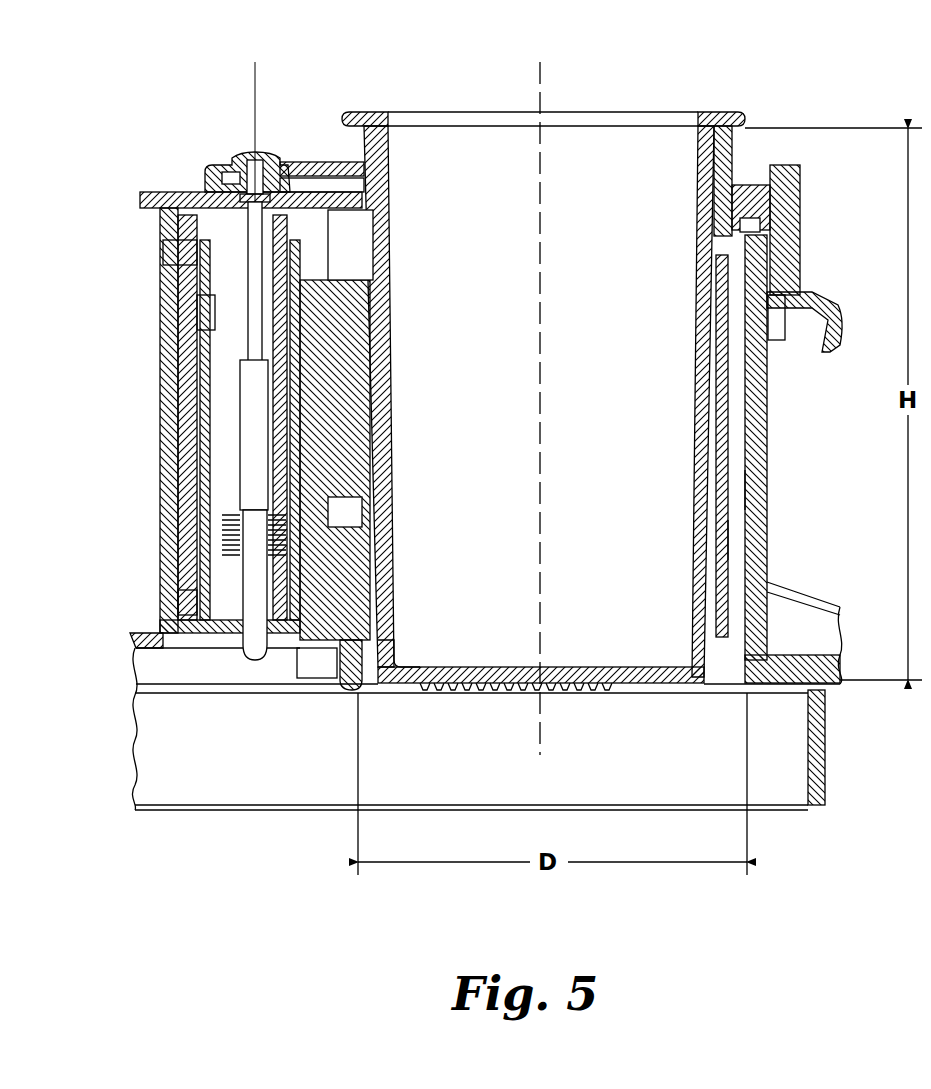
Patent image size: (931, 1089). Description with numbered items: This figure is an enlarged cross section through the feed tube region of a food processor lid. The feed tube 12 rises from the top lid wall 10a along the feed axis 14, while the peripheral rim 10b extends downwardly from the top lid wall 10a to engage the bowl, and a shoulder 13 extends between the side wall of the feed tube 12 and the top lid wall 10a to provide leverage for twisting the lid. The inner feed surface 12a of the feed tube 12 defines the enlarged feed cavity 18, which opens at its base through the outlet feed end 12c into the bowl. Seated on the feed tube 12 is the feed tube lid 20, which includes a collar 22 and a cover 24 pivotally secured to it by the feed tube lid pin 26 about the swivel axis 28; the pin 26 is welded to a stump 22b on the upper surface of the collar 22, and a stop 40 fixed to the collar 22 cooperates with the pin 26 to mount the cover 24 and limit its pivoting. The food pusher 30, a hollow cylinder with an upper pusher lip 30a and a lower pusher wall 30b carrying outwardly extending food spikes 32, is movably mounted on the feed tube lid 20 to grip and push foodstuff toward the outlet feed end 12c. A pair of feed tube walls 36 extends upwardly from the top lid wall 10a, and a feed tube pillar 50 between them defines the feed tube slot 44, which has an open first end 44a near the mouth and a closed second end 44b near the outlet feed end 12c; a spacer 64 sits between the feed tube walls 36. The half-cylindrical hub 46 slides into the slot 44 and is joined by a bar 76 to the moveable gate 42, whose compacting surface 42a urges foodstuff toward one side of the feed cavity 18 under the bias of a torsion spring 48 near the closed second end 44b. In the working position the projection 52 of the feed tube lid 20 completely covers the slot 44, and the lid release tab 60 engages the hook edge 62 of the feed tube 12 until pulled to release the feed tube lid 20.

The top lid wall 10a is at (145, 650).
The peripheral rim 10b is at (315, 770).
The feed tube 12 is at (781, 393).
The inner feed surface 12a is at (745, 490).
The outlet feed end 12c is at (770, 690).
The shoulder 13 is at (745, 650).
The feed axis 14 is at (545, 68).
The feed cavity 18 is at (790, 605).
The feed tube lid 20 is at (807, 435).
The collar 22 is at (150, 205).
The stump 22b is at (200, 186).
The cover 24 is at (256, 62).
The feed tube lid pin 26 is at (245, 158).
The swivel axis 28 is at (242, 155).
The food pusher 30 is at (568, 400).
The upper pusher lip 30a is at (702, 112).
The lower pusher wall 30b is at (410, 692).
The food spikes 32 is at (600, 692).
The feed tube walls 36 is at (165, 515).
The stop 40 is at (790, 172).
The moveable gate 42 is at (780, 446).
The compacting surface 42a is at (730, 540).
The feed tube slot 44 is at (178, 470).
The open first end 44a is at (175, 262).
The closed second end 44b is at (190, 600).
The hub 46 is at (205, 345).
The torsion spring 48 is at (215, 555).
The feed tube pillar 50 is at (240, 430).
The projection 52 is at (199, 187).
The lid release tab 60 is at (840, 322).
The hook edge 62 is at (800, 335).
The spacer 64 is at (185, 325).
The bar 76 is at (345, 392).